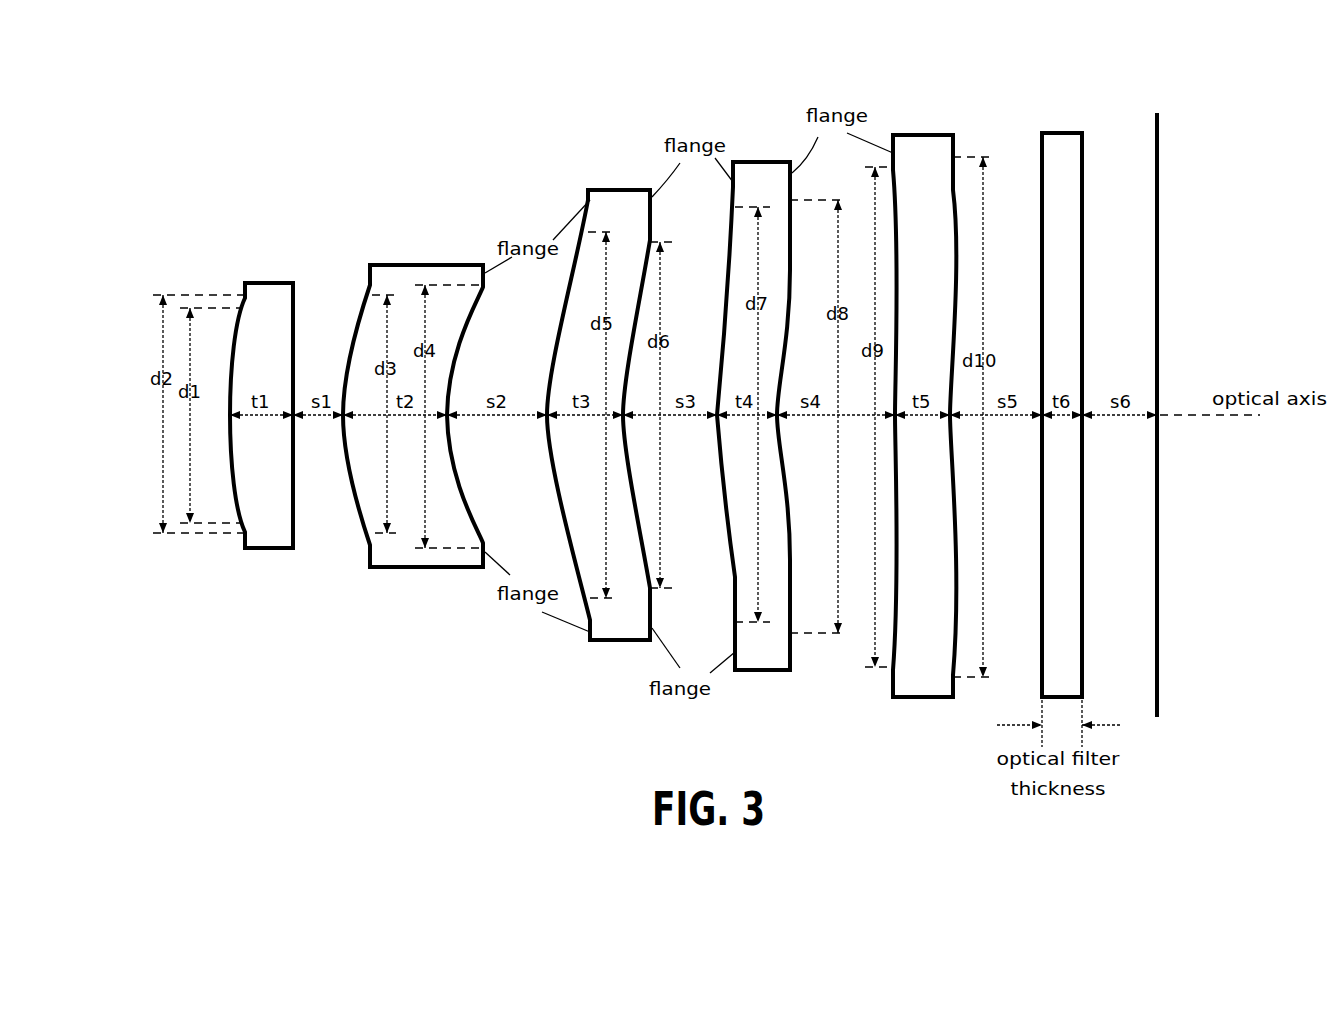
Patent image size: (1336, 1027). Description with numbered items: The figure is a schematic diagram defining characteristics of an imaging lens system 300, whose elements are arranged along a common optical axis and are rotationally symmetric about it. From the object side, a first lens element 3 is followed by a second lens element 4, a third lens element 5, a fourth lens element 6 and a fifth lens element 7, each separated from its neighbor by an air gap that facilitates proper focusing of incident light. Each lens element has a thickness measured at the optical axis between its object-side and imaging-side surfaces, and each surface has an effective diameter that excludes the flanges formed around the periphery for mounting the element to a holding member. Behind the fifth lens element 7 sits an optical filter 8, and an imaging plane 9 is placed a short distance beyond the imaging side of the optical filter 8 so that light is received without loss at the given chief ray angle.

The lens system 300 is at (688, 31).
The first lens element 3 is at (265, 303).
The second lens element 4 is at (397, 283).
The third lens element 5 is at (600, 210).
The fourth lens element 6 is at (765, 178).
The fifth lens element 7 is at (922, 155).
The optical filter 8 is at (1055, 152).
The imaging plane 9 is at (1153, 140).